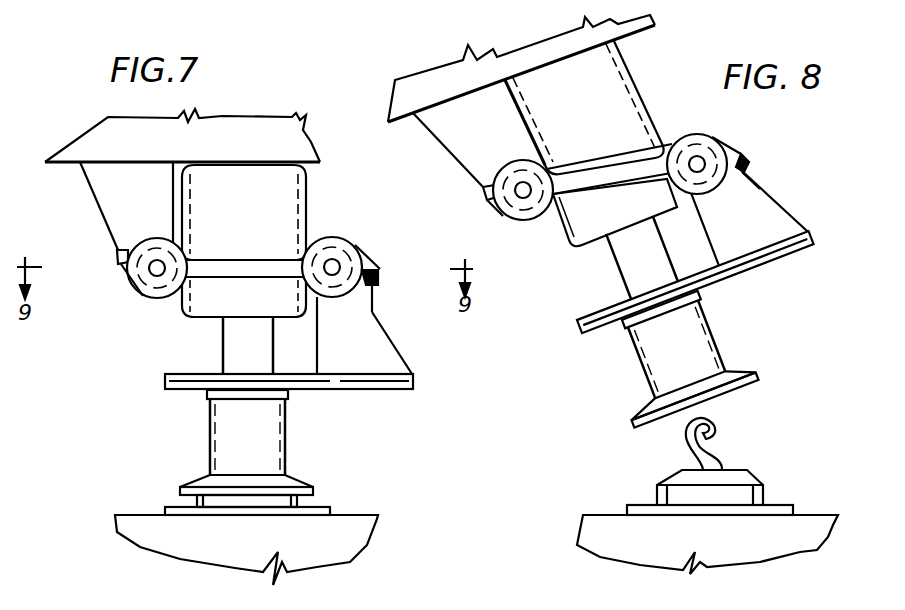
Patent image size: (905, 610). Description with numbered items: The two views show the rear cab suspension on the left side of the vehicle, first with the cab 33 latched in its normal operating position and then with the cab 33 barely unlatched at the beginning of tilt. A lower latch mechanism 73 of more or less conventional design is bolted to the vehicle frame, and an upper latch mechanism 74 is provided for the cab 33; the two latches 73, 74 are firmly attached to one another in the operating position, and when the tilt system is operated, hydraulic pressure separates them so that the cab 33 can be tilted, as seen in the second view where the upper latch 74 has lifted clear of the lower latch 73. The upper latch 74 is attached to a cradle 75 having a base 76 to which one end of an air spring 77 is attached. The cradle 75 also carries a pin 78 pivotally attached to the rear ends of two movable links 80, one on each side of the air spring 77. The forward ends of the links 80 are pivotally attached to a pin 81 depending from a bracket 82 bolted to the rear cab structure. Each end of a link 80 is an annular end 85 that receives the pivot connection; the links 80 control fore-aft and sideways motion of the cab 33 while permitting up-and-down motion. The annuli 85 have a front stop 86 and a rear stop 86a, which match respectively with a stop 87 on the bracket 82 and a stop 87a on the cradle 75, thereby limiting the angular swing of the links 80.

In FIG. 7, the cab 33 is at (222, 114).
In FIG. 8, the cab 33 is at (448, 72).
In FIG. 7, the lower latch mechanism 73 is at (259, 497).
In FIG. 8, the lower latch mechanism 73 is at (707, 453).
In FIG. 7, the upper latch mechanism 74 is at (255, 442).
In FIG. 8, the upper latch mechanism 74 is at (699, 347).
In FIG. 7, the cradle 75 is at (337, 372).
In FIG. 8, the cradle 75 is at (748, 210).
In FIG. 7, the base 76 is at (268, 369).
In FIG. 8, the base 76 is at (695, 297).
In FIG. 7, the air spring 77 is at (251, 207).
In FIG. 8, the air spring 77 is at (587, 107).
In FIG. 8, the pin 78 is at (697, 162).
In FIG. 7, the movable link 80 is at (252, 248).
In FIG. 8, the movable link 80 is at (601, 177).
In FIG. 7, the pin 81 is at (157, 268).
In FIG. 8, the pin 81 is at (523, 188).
In FIG. 7, the bracket 82 is at (146, 194).
In FIG. 8, the bracket 82 is at (498, 144).
In FIG. 7, the annular end 85 is at (122, 270).
In FIG. 8, the annular end 85 is at (497, 173).
In FIG. 7, the front stop 86 is at (118, 258).
In FIG. 8, the front stop 86 is at (483, 185).
In FIG. 7, the stop 87 is at (117, 250).
In FIG. 8, the stop 87 is at (485, 198).
In FIG. 7, the rear stop 86a is at (378, 272).
In FIG. 8, the rear stop 86a is at (748, 166).
In FIG. 7, the stop 87a is at (376, 283).
In FIG. 8, the stop 87a is at (744, 163).